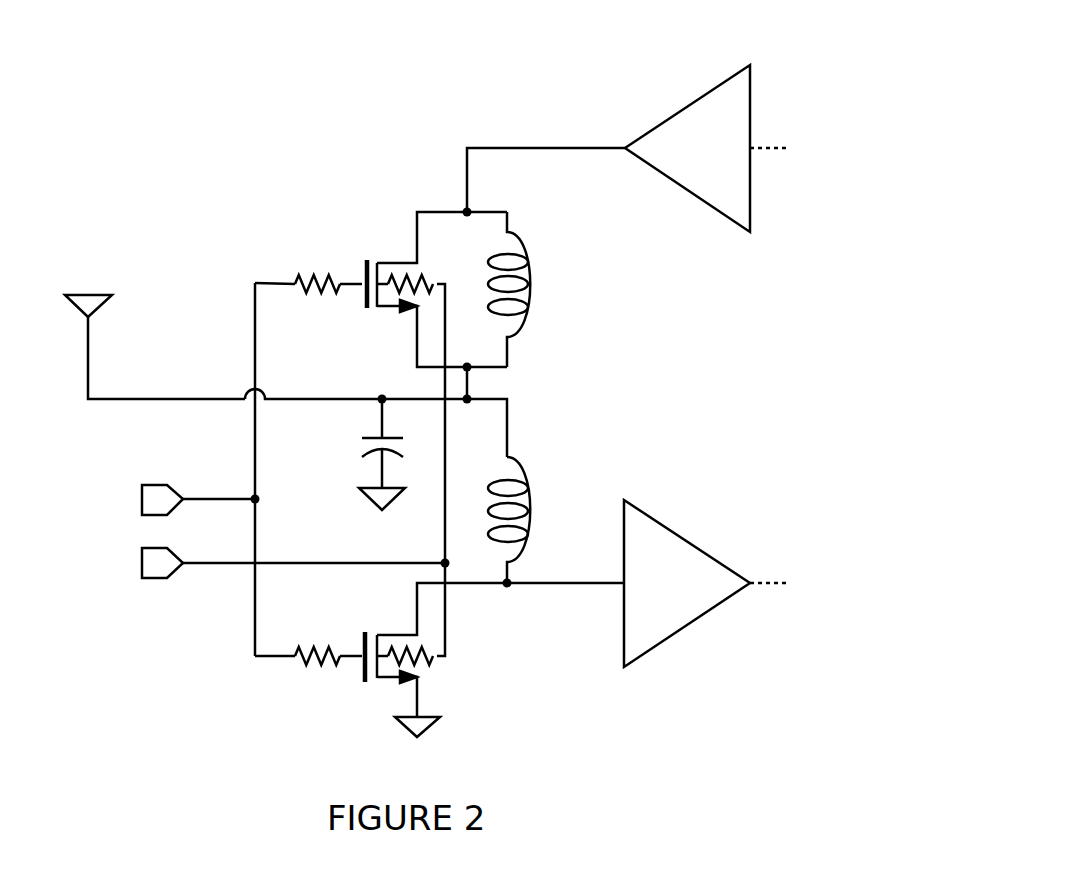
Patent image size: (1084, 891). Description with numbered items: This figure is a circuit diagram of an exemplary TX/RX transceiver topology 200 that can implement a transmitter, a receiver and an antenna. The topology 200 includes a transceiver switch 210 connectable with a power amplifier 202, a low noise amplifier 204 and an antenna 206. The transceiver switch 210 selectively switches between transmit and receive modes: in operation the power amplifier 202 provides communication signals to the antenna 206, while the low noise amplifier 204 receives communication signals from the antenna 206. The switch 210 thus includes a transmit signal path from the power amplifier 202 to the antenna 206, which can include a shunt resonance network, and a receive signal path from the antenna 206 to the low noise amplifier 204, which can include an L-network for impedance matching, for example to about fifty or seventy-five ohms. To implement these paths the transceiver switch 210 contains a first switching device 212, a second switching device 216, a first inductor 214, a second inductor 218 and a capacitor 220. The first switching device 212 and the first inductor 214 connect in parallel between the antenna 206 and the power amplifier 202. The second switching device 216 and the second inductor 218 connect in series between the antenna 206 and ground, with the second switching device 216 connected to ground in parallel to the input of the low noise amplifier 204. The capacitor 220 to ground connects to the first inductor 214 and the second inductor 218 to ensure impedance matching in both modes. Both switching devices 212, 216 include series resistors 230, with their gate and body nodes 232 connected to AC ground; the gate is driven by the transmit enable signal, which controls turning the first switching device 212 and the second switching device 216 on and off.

The TX/RX transceiver topology 200 is at (210, 113).
The power amplifier 202 is at (750, 103).
The low noise amplifier 204 is at (682, 555).
The antenna 206 is at (82, 292).
The transceiver switch 210 is at (183, 682).
The first switching device 212 is at (352, 217).
The first inductor 214 is at (542, 317).
The second switching device 216 is at (352, 680).
The second inductor 218 is at (535, 495).
The capacitor 220 is at (350, 470).
The series resistors 230 is at (437, 272).
The gate and body nodes 232 is at (102, 590).